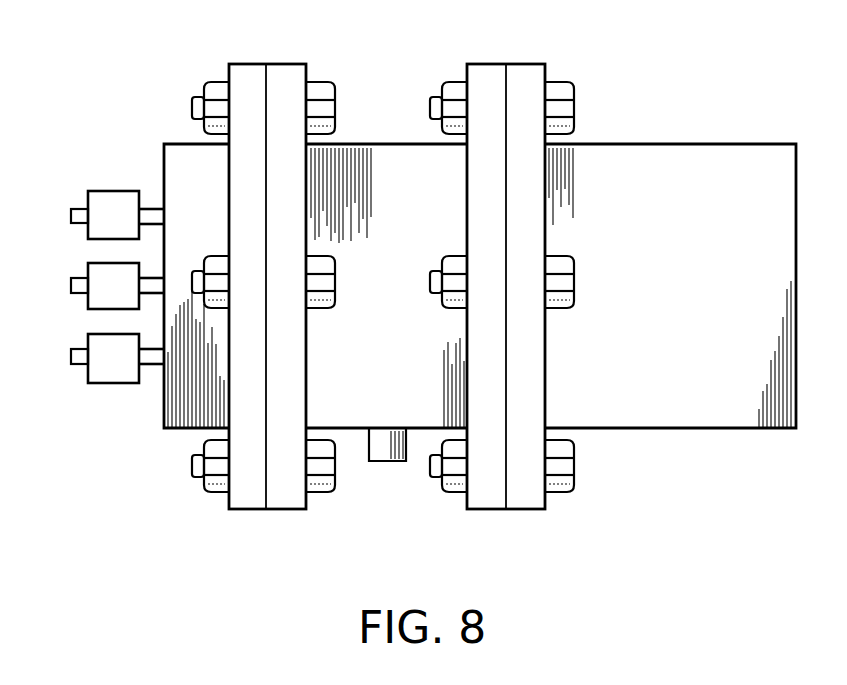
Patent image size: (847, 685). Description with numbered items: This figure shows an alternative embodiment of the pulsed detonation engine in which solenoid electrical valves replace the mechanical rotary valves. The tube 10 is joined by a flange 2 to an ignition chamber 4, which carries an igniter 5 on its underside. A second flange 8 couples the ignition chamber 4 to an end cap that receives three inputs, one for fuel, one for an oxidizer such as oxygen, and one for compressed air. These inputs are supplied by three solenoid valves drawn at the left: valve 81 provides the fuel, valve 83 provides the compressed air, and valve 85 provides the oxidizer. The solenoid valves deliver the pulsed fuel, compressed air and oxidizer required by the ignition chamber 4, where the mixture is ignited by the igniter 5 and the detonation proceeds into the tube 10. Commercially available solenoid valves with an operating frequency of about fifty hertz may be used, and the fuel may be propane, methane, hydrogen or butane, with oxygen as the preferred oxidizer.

The flange 2 is at (532, 82).
The ignition chamber 4 is at (385, 167).
The igniter 5 is at (385, 450).
The flange 8 is at (298, 80).
The tube 10 is at (688, 143).
The solenoid valve 81 is at (110, 190).
The solenoid valve 83 is at (98, 262).
The solenoid valve 85 is at (98, 333).